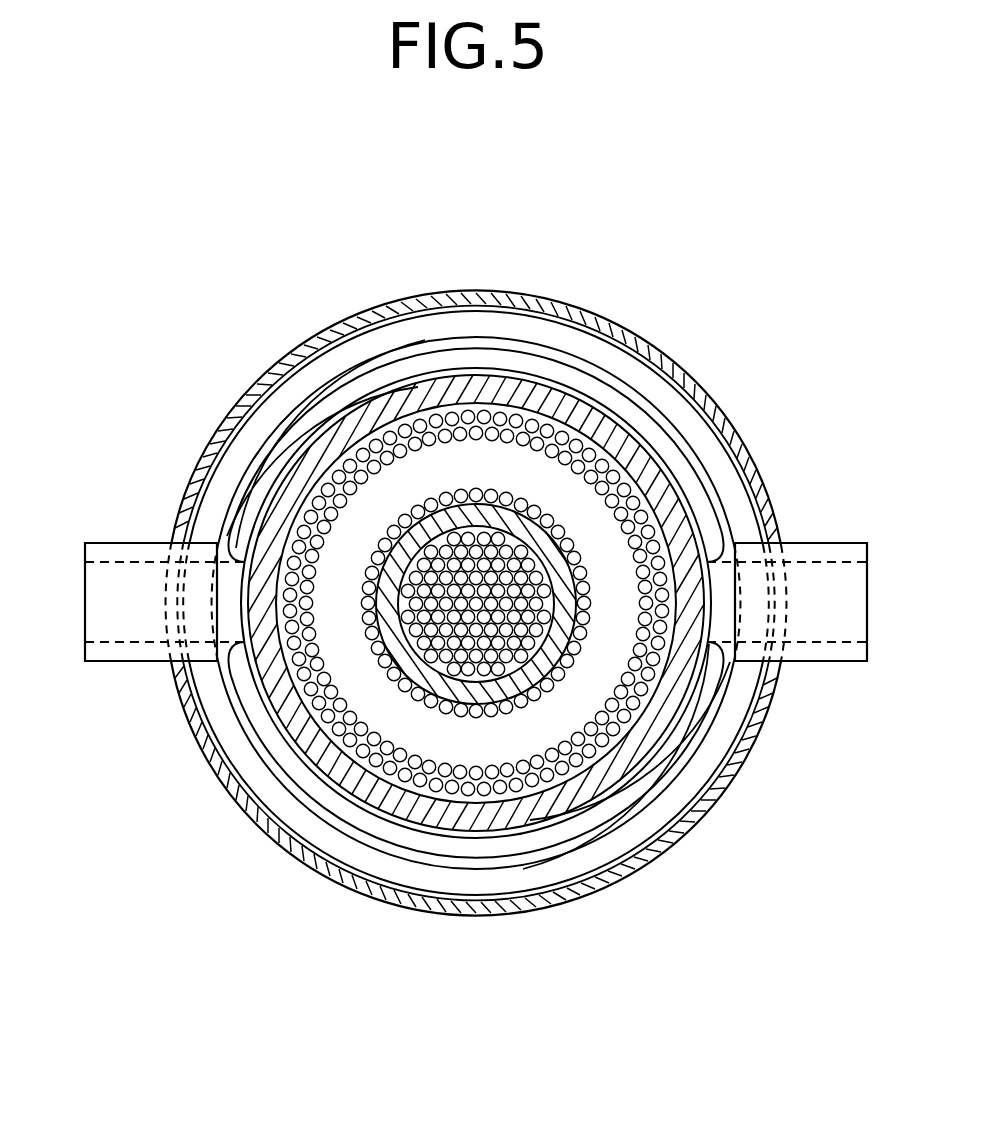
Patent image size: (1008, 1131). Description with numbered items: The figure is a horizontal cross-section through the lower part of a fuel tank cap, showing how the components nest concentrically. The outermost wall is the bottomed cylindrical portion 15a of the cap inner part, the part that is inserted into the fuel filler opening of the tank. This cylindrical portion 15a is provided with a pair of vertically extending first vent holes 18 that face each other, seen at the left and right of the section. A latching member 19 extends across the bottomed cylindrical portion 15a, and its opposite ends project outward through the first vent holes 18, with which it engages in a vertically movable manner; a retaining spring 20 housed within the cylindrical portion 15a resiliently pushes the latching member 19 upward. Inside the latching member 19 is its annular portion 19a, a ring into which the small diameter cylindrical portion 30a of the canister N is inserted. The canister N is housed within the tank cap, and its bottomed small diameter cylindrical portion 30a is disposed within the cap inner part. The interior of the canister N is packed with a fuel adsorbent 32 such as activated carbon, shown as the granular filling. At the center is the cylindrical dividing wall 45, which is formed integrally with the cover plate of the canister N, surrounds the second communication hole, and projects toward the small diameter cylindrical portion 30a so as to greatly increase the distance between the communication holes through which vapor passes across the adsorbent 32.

The bottomed cylindrical portion 15a is at (262, 374).
The retaining spring 20 is at (496, 320).
The annular portion 19a is at (567, 385).
The canister N is at (628, 427).
The small diameter cylindrical portion 30a is at (680, 518).
The fuel adsorbent 32 is at (514, 783).
The cylindrical dividing wall 45 is at (550, 655).
The latching member 19 is at (135, 546).
The first vent holes 18 is at (172, 664).